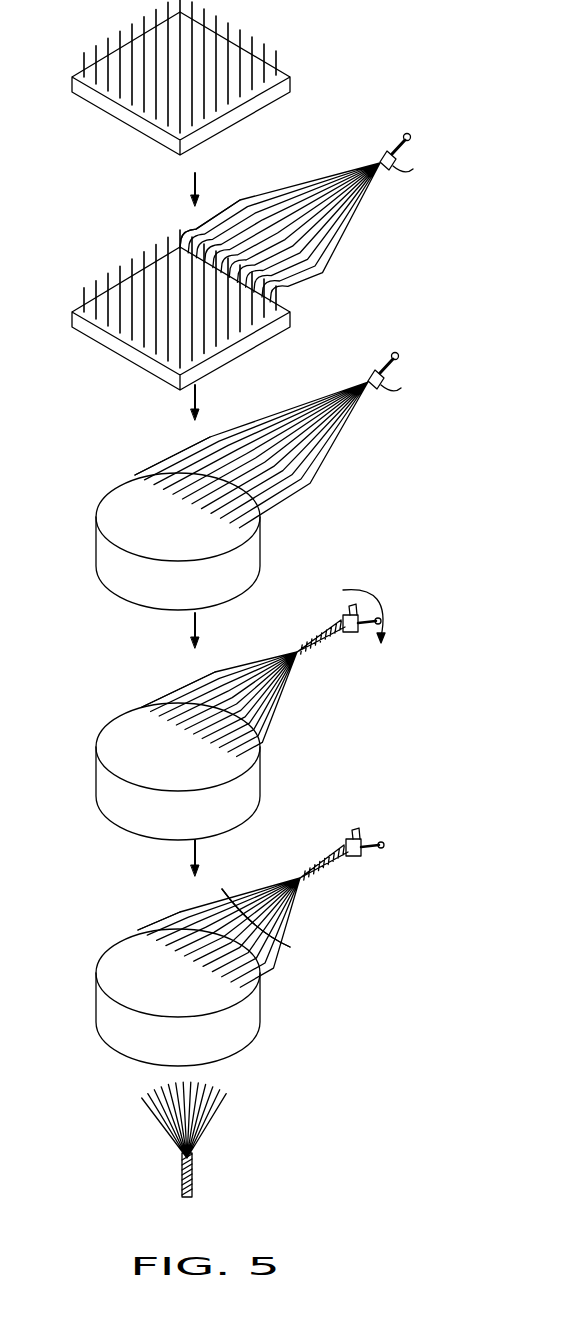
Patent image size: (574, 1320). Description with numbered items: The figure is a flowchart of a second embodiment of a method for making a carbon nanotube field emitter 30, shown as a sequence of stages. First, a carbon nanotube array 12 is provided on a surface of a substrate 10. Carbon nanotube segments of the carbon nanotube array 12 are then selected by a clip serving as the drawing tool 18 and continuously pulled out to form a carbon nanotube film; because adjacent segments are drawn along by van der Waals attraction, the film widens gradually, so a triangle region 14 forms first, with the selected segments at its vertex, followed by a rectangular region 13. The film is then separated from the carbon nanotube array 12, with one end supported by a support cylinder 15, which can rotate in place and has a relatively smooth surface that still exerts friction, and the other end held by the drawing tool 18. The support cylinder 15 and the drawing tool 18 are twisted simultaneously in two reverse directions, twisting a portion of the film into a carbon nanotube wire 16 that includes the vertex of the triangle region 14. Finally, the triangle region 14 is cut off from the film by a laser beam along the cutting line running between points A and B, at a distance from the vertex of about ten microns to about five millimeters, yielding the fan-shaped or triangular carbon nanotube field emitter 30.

The substrate 10 is at (122, 112).
The carbon nanotube array 12 is at (128, 36).
The rectangular region 13 is at (200, 230).
The triangle region 14 is at (335, 243).
The support cylinder 15 is at (250, 550).
The carbon nanotube wire 16 is at (318, 641).
The drawing tool 18 is at (410, 148).
The carbon nanotube field emitter 30 is at (197, 1152).
The cutting line endpoint A is at (252, 906).
The cutting line endpoint B is at (266, 926).